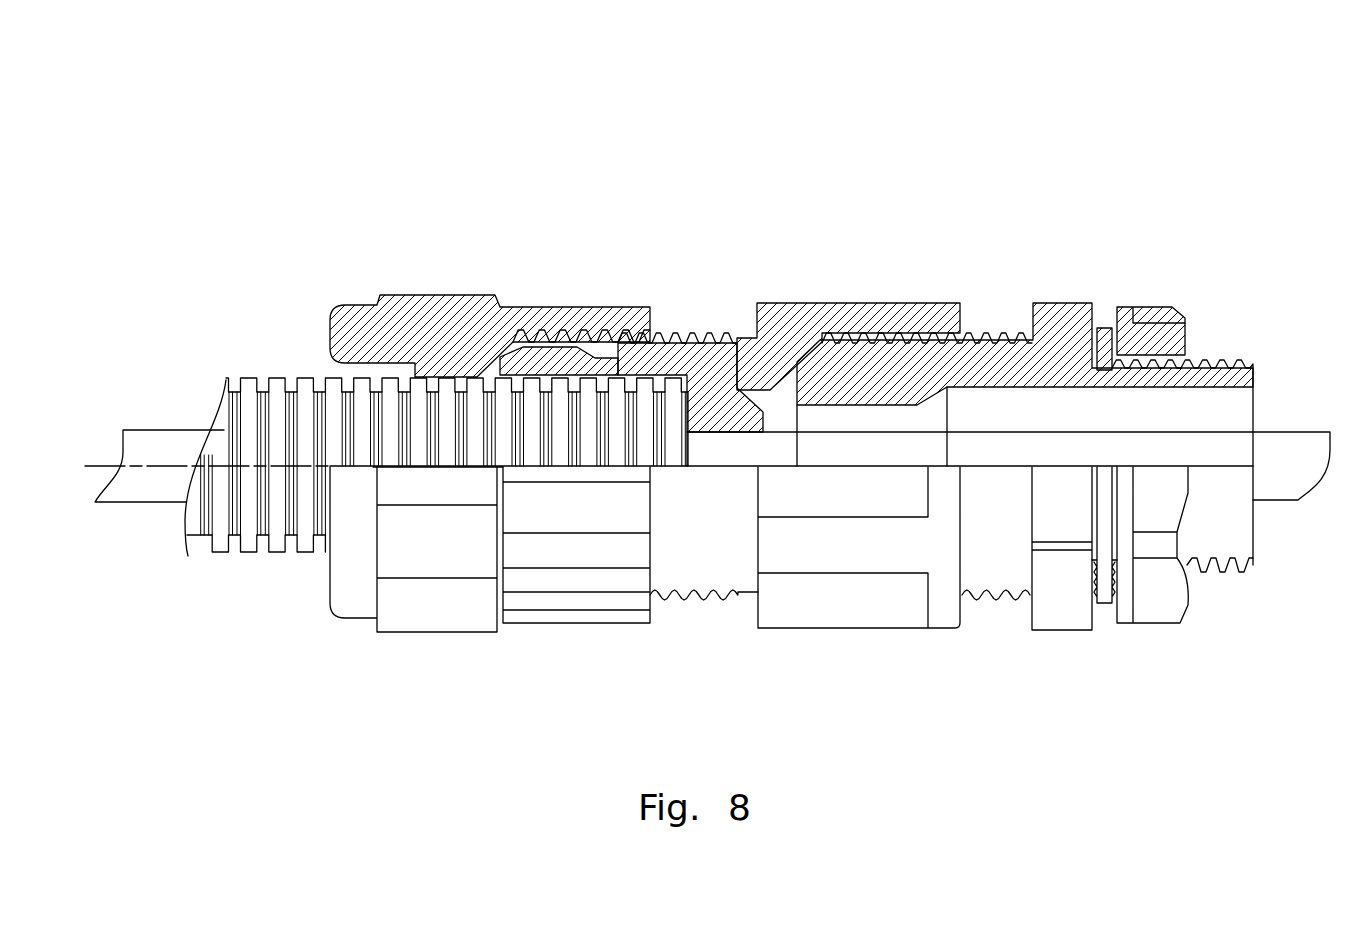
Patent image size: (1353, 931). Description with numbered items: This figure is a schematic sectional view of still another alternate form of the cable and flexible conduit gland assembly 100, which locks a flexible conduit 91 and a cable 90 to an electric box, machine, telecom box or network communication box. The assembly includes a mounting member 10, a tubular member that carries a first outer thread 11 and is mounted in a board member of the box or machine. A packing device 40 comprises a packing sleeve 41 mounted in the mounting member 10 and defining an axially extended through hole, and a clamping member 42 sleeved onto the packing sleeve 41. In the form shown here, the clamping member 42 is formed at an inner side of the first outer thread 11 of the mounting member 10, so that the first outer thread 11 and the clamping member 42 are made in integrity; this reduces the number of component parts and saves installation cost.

The cable and flexible conduit gland assembly 100 is at (779, 352).
The flexible conduit 91 is at (247, 417).
The cable 90 is at (1282, 448).
The packing device 40 is at (970, 378).
The clamping member 42 is at (823, 365).
The packing sleeve 41 is at (866, 385).
The mounting member 10 is at (1107, 400).
The first outer thread 11 is at (980, 333).